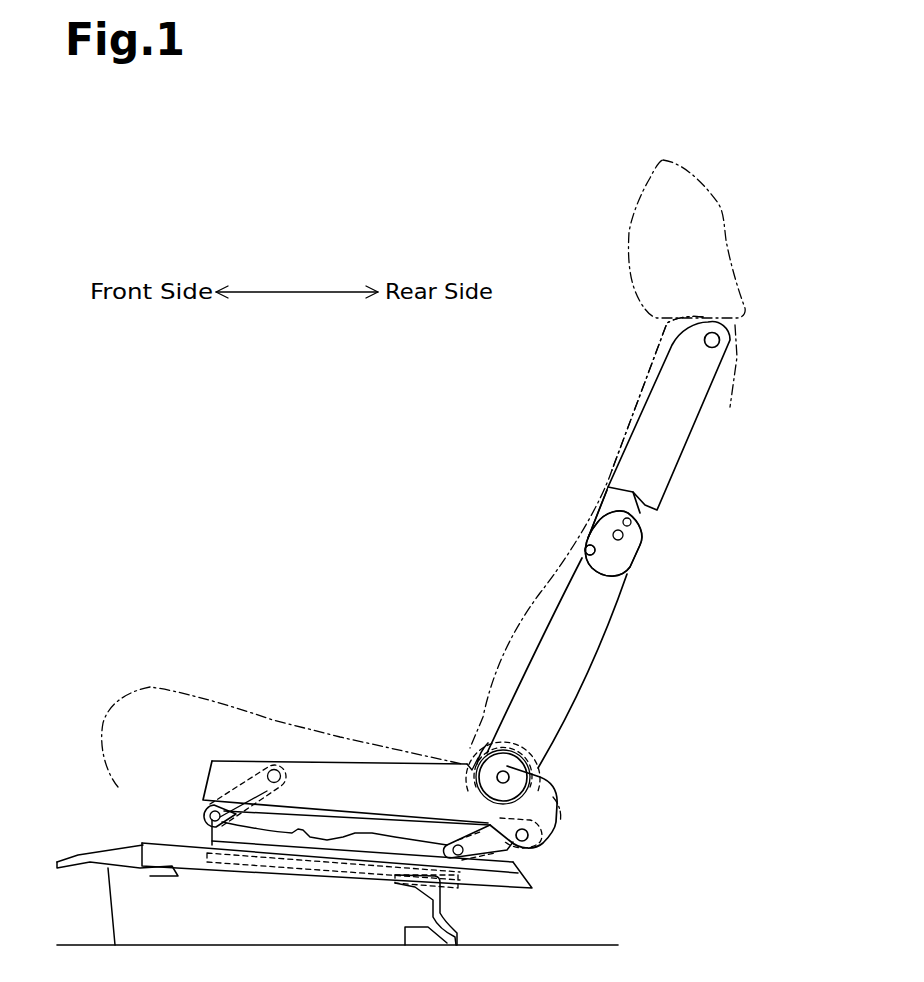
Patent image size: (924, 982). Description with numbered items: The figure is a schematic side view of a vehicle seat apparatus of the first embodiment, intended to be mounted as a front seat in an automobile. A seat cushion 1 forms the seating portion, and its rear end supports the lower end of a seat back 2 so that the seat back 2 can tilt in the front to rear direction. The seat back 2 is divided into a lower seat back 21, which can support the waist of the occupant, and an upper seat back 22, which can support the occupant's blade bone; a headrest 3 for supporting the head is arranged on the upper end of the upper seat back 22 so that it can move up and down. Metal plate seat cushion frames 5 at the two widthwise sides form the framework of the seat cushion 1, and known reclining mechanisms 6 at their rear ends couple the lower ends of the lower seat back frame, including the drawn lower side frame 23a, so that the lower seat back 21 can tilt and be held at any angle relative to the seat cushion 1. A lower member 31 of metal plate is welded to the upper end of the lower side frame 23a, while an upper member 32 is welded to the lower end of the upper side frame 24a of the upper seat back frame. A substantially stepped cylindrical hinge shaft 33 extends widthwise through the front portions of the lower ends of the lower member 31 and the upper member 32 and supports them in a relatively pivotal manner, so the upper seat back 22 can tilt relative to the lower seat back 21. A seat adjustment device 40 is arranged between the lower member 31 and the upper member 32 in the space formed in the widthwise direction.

The seat cushion 1 is at (233, 706).
The seat back 2 is at (539, 429).
The headrest 3 is at (628, 232).
The seat cushion frame 5 is at (360, 778).
The reclining mechanism 6 is at (463, 744).
The lower seat back 21 is at (537, 596).
The upper seat back 22 is at (633, 375).
The lower side frame 23a is at (584, 681).
The upper side frame 24a is at (682, 452).
The lower member 31 is at (633, 567).
The upper member 32 is at (607, 490).
The hinge shaft 33 is at (586, 543).
The seat adjustment device 40 is at (654, 548).